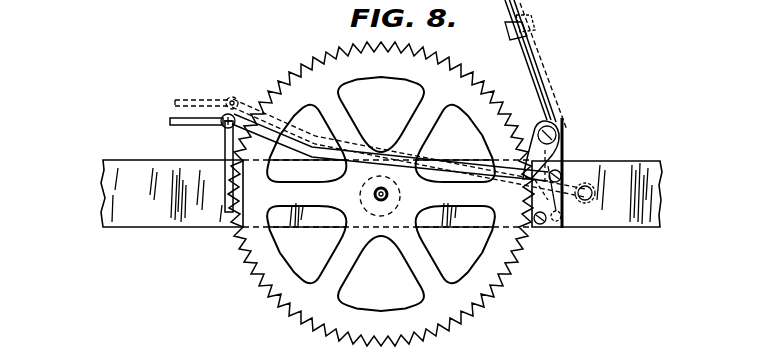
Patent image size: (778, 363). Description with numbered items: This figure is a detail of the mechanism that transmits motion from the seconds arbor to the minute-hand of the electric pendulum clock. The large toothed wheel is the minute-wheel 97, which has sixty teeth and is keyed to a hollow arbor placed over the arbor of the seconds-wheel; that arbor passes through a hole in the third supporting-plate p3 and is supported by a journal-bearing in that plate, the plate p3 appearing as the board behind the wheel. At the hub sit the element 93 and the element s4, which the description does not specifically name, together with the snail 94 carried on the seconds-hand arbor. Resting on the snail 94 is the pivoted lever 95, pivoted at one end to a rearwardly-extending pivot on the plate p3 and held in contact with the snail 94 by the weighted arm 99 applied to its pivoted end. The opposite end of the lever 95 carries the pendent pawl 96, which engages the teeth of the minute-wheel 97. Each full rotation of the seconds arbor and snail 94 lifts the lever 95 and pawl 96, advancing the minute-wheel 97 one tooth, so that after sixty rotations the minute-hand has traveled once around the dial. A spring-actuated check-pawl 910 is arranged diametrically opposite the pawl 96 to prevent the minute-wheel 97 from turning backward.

The third supporting-plate p3 is at (110, 187).
The minute-wheel 97 is at (498, 298).
The hub 93 is at (373, 193).
The snail 94 is at (397, 192).
The shaft s4 is at (381, 202).
The pivoted lever 95 is at (408, 148).
The pawl 96 is at (232, 153).
The weighted arm 99 is at (531, 56).
The spring-actuated check-pawl 910 is at (544, 153).